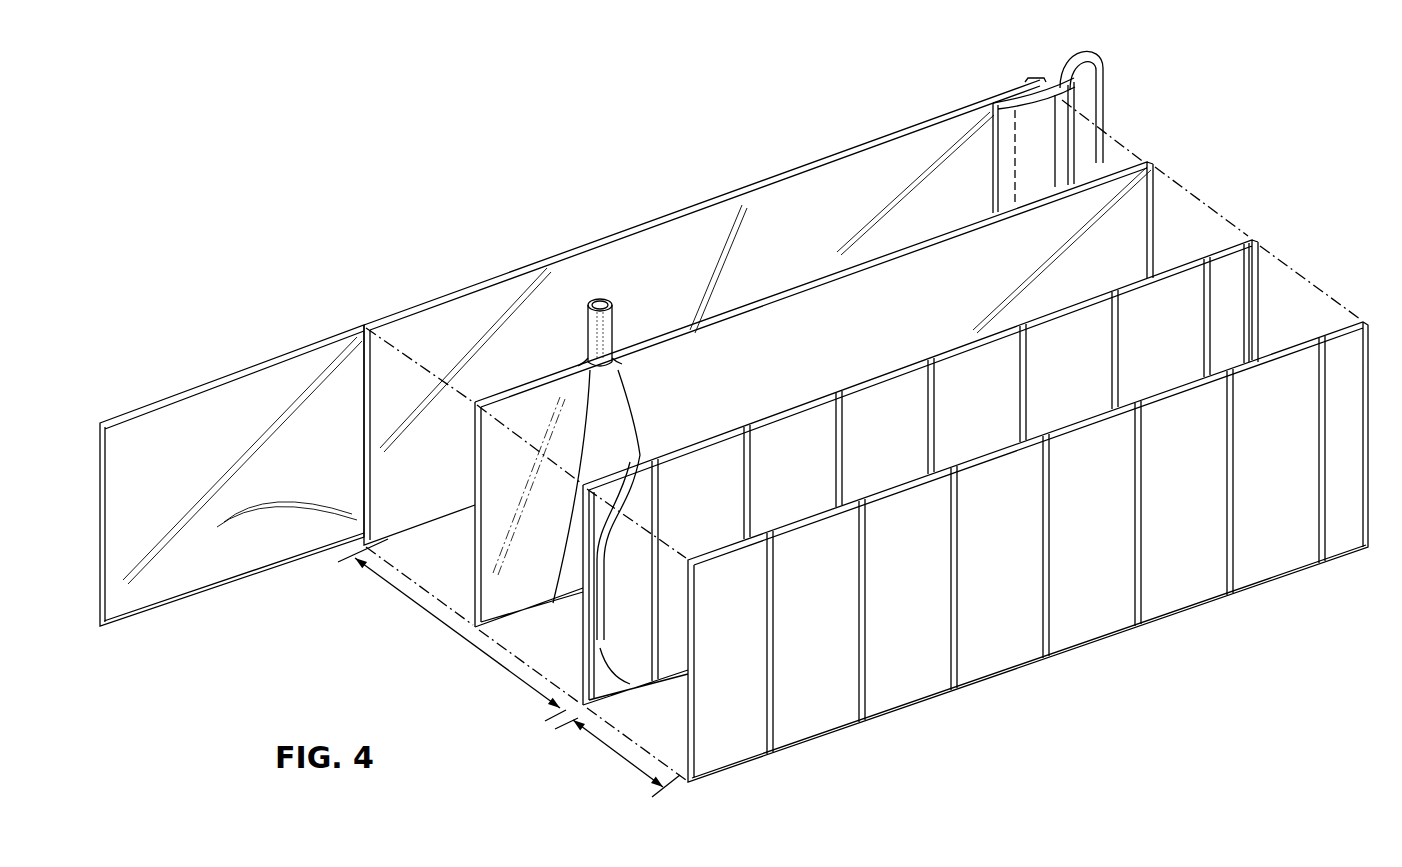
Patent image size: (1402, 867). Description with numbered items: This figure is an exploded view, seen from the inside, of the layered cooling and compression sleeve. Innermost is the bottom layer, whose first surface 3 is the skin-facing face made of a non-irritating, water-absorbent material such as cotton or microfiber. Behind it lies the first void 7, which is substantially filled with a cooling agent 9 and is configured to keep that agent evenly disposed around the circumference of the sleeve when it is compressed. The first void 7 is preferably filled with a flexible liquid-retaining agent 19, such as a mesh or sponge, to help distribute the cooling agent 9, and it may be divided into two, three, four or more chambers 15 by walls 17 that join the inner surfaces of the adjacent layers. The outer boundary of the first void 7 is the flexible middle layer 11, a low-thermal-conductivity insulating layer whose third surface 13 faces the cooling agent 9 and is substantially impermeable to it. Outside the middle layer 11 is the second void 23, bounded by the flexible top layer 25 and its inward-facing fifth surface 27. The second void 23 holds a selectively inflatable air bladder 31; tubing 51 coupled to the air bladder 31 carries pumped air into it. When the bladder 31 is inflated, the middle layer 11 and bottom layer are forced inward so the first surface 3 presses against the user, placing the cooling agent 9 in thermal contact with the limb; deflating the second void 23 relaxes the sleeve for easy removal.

The first surface 3 is at (907, 688).
The first void 7 is at (613, 750).
The cooling agent 9 is at (605, 607).
The middle layer 11 is at (574, 578).
The third surface 13 is at (779, 394).
The chambers 15 is at (628, 482).
The walls 17 is at (750, 530).
The liquid-retaining agent 19 is at (888, 472).
The second void 23 is at (395, 592).
The top layer 25 is at (352, 416).
The fifth surface 27 is at (480, 298).
The inflatable air bladder 31 is at (461, 497).
The tubing 51 is at (615, 332).